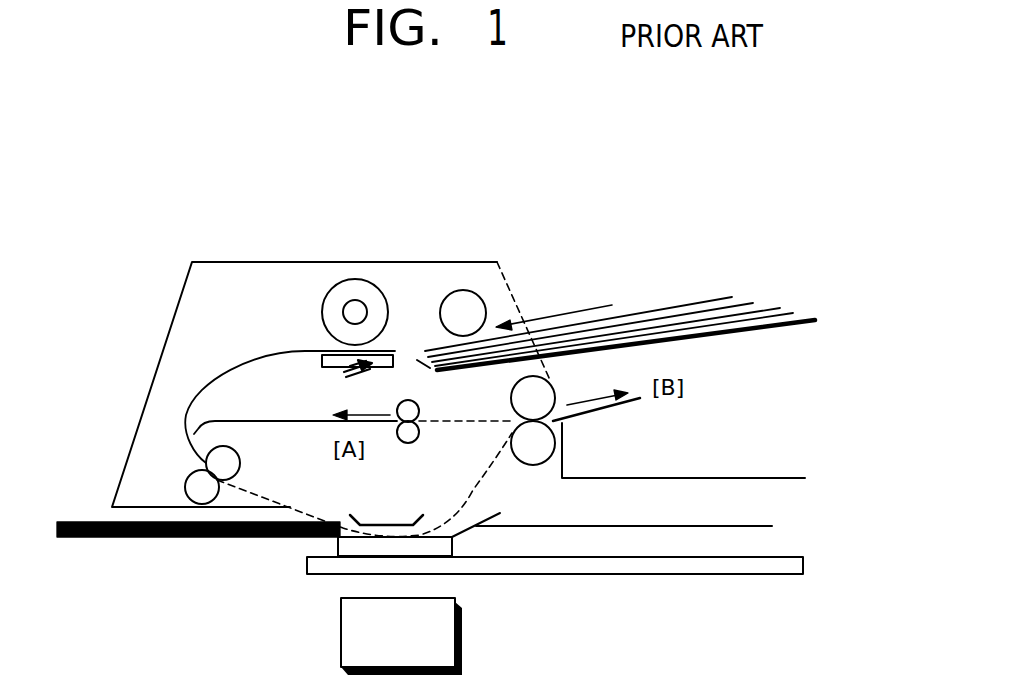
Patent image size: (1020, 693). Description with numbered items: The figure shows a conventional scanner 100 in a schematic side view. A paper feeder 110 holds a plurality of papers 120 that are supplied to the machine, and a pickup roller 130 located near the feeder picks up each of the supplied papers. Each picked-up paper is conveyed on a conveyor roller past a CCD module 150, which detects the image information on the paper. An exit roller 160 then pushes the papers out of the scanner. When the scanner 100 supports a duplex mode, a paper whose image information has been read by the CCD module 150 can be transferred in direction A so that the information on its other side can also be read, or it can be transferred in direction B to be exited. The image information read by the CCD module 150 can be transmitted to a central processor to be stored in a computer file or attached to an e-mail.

The scanner 100 is at (778, 159).
The paper feeder 110 is at (798, 325).
The papers 120 is at (643, 313).
The pickup roller 130 is at (478, 290).
The CCD module 150 is at (401, 636).
The exit roller 160 is at (557, 443).